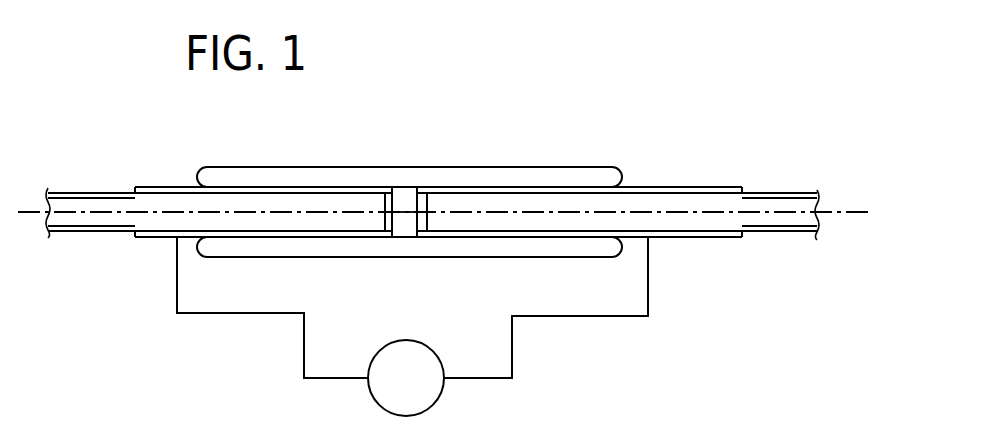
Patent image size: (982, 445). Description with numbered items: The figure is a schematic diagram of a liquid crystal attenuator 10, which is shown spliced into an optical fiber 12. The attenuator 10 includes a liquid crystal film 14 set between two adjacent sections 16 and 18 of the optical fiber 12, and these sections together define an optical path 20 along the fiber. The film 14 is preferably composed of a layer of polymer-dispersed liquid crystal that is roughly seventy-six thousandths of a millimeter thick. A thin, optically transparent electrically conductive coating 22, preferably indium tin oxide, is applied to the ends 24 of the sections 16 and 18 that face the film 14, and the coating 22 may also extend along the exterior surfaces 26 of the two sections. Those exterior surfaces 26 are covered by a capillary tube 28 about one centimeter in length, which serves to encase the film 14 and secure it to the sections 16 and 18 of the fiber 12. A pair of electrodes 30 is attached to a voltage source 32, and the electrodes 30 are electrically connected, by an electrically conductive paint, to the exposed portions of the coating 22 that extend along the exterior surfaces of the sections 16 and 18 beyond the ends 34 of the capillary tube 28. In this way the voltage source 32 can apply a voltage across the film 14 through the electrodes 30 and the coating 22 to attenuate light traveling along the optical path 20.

The liquid crystal attenuator 10 is at (485, 121).
The optical fiber 12 is at (182, 187).
The liquid crystal film 14 is at (400, 205).
The section of optical fiber 16 is at (108, 203).
The section of optical fiber 18 is at (717, 207).
The optical path 20 is at (847, 220).
The electrically conductive coating 22 is at (445, 192).
The ends of fiber sections 24 is at (385, 205).
The exterior surfaces 26 is at (547, 190).
The capillary tube 28 is at (508, 170).
The electrodes 30 is at (177, 282).
The voltage source 32 is at (433, 405).
The ends of capillary tube 34 is at (625, 175).